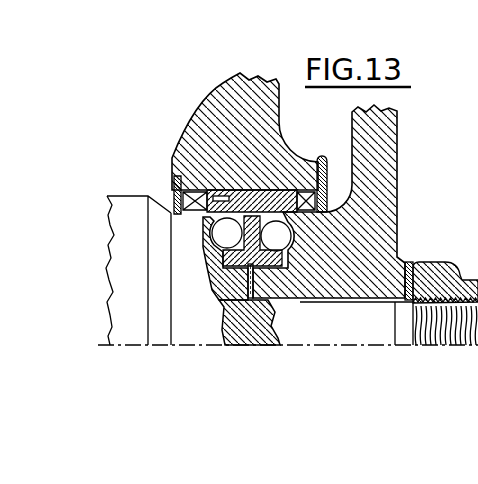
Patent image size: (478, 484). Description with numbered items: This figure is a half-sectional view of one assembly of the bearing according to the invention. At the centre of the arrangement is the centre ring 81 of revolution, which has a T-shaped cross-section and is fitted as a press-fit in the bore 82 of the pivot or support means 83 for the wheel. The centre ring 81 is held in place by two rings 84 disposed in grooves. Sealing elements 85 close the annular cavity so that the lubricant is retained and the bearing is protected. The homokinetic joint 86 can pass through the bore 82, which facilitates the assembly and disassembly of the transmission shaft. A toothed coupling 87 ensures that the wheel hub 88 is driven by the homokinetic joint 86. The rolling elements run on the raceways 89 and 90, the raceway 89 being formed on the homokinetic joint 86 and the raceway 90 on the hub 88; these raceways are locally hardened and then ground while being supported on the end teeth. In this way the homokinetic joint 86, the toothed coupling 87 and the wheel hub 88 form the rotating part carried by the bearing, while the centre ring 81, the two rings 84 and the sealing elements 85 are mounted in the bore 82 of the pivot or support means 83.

The centre ring of revolution 81 is at (253, 190).
The bore 82 is at (225, 190).
The pivot or support means 83 is at (236, 102).
The rings 84 is at (172, 172).
The sealing elements 85 is at (200, 208).
The homokinetic joint 86 is at (127, 243).
The toothed coupling 87 is at (271, 312).
The wheel hub 88 is at (376, 184).
The raceway 89 is at (215, 258).
The raceway 90 is at (286, 280).